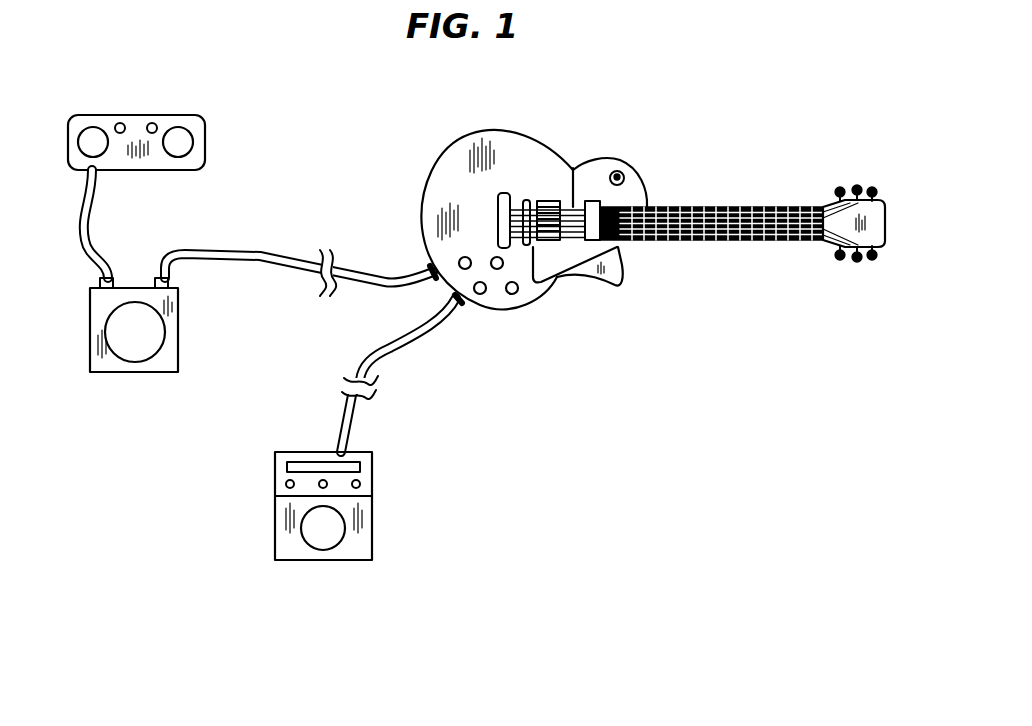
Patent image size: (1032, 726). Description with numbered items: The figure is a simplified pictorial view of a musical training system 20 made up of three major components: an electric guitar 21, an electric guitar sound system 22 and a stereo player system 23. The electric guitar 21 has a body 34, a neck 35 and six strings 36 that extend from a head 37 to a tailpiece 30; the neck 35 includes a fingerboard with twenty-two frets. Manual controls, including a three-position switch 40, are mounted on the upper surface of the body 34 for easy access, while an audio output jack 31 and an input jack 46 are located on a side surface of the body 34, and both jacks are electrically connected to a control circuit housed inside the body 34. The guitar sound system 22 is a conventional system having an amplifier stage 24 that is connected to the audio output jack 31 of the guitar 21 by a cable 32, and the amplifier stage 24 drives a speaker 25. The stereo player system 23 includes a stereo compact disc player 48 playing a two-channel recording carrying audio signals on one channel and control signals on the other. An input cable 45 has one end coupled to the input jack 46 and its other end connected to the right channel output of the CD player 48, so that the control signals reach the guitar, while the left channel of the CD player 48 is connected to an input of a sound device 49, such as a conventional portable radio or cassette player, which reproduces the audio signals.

The musical training system 20 is at (346, 148).
The electric guitar 21 is at (612, 160).
The electric guitar sound system 22 is at (372, 522).
The stereo player system 23 is at (74, 378).
The amplifier stage 24 is at (275, 466).
The speaker 25 is at (328, 537).
The tailpiece 30 is at (498, 196).
The audio output jack 31 is at (462, 303).
The cable 32 is at (385, 352).
The body 34 is at (433, 172).
The neck 35 is at (740, 242).
The strings 36 is at (573, 155).
The head 37 is at (872, 222).
The three-position switch 40 is at (625, 172).
The input cable 45 is at (266, 256).
The input jack 46 is at (428, 262).
The stereo compact disc player 48 is at (145, 373).
The sound device 49 is at (166, 117).